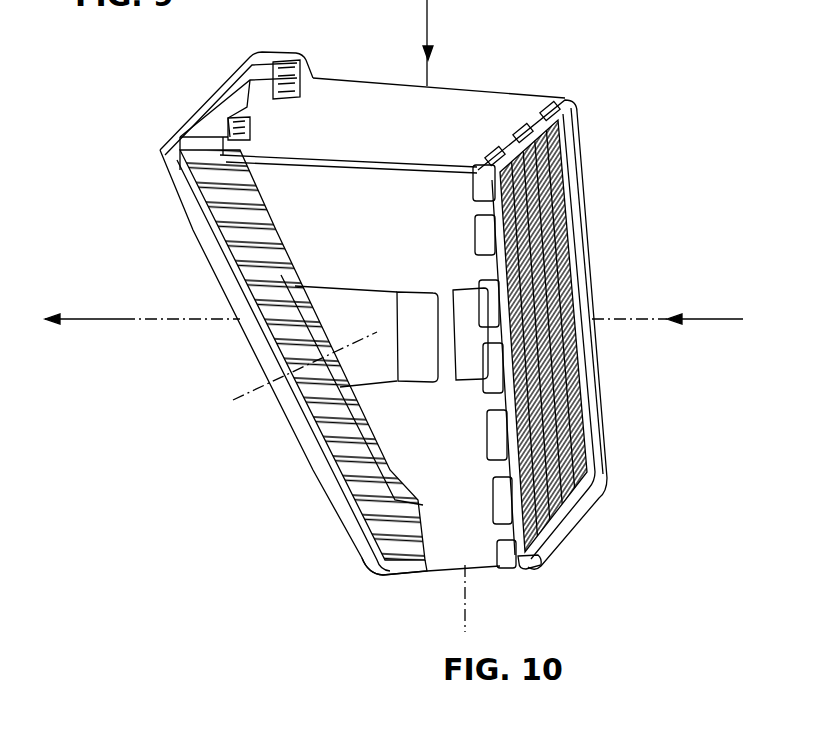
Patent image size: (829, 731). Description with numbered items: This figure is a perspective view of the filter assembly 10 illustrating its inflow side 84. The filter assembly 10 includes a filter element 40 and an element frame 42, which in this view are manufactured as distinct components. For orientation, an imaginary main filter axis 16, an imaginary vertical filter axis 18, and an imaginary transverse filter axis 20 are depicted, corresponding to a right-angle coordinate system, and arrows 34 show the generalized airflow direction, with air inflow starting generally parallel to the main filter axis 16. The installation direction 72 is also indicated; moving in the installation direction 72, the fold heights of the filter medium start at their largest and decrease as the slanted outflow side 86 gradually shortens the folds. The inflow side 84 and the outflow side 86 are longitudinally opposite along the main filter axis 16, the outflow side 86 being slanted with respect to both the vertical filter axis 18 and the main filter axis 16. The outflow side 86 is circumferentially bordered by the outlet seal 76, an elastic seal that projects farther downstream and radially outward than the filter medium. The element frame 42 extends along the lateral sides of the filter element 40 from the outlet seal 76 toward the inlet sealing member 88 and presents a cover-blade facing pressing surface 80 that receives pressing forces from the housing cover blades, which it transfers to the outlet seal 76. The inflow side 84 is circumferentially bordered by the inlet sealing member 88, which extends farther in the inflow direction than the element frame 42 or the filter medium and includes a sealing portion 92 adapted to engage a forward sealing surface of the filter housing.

The filter assembly 10 is at (614, 54).
The main filter axis 16 is at (200, 322).
The vertical filter axis 18 is at (470, 617).
The transverse filter axis 20 is at (237, 397).
The arrows 34 is at (82, 320).
The filter element 40 is at (600, 269).
The element frame 42 is at (493, 113).
The installation direction 72 is at (428, 27).
The outlet seal 76 is at (382, 578).
The cover-blade facing pressing surface 80 is at (258, 203).
The inflow side 84 is at (563, 200).
The outflow side 86 is at (185, 198).
The inlet sealing member 88 is at (527, 568).
The sealing portion 92 is at (600, 390).